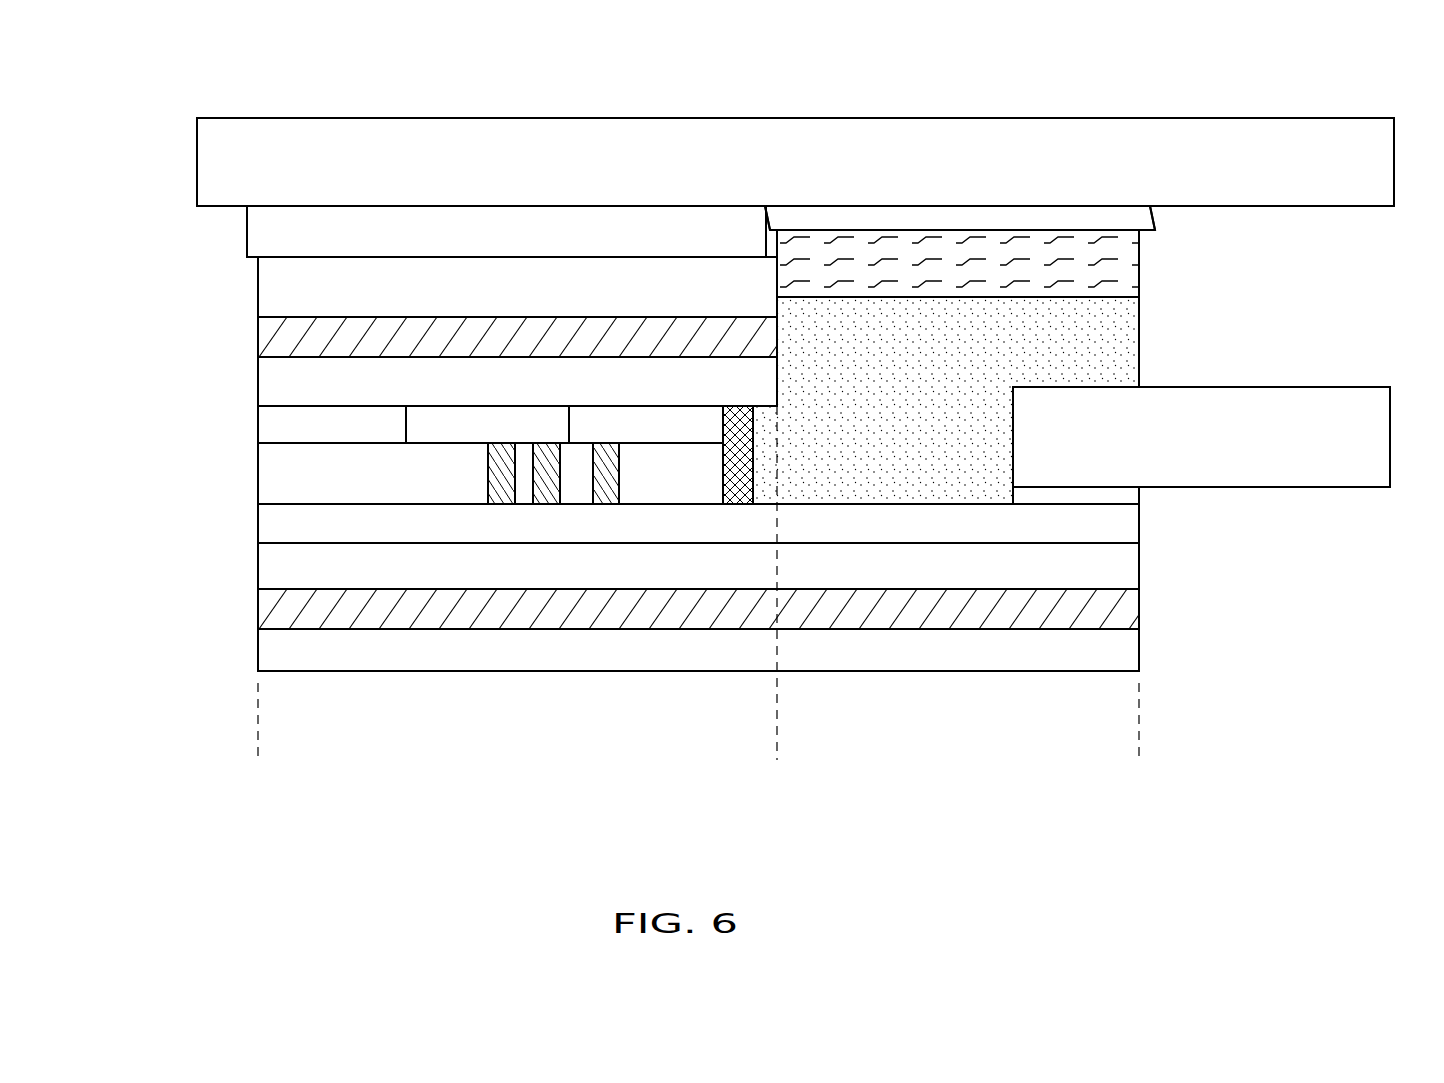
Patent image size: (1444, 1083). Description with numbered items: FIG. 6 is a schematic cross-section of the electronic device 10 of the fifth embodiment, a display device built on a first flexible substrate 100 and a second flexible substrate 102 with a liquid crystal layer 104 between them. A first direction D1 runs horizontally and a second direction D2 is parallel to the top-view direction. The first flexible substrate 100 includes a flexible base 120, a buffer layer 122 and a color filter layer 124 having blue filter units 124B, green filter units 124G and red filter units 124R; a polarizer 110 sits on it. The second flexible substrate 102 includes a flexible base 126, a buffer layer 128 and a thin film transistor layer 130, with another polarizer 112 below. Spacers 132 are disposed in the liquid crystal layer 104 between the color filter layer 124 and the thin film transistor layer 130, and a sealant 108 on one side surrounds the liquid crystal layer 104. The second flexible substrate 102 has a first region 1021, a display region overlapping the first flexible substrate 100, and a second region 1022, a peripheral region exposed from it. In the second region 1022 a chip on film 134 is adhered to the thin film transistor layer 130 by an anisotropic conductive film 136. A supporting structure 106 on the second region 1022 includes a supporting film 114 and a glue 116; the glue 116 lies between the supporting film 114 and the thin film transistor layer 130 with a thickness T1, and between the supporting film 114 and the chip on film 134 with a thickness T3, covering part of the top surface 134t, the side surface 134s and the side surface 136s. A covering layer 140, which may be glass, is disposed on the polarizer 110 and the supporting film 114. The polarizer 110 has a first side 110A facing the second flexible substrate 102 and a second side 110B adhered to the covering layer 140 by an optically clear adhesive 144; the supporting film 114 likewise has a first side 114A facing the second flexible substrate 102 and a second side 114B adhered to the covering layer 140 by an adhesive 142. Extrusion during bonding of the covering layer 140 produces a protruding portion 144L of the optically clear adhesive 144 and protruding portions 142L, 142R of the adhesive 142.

The electronic device 10 is at (1222, 75).
The covering layer 140 is at (218, 155).
The optically clear adhesive 144 is at (567, 217).
The protruding portion 144L is at (250, 235).
The second side 110B is at (473, 255).
The adhesive 142 is at (978, 217).
The protruding portion 142L is at (775, 210).
The protruding portion 142R is at (1142, 210).
The second side 114B is at (878, 228).
The supporting structure 106 is at (1023, 359).
The supporting film 114 is at (1127, 255).
The glue 116 is at (994, 399).
The first side 114A is at (833, 300).
The polarizer 110 is at (285, 288).
The first flexible substrate 100 is at (447, 380).
The flexible base 120 is at (285, 340).
The buffer layer 122 is at (285, 383).
The color filter layer 124 is at (480, 424).
The blue filter units 124B is at (353, 424).
The green filter units 124G is at (511, 424).
The red filter units 124R is at (667, 424).
The first side 110A is at (318, 322).
The liquid crystal layer 104 is at (285, 470).
The spacers 132 is at (488, 490).
The sealant 108 is at (742, 506).
The second flexible substrate 102 is at (628, 587).
The thin film transistor layer 130 is at (285, 524).
The buffer layer 128 is at (285, 569).
The flexible base 126 is at (285, 614).
The polarizer 112 is at (661, 650).
The chip on film 134 is at (1201, 437).
The top surface 134t is at (1345, 387).
The side surface 134s is at (1013, 445).
The anisotropic conductive film 136 is at (1130, 495).
The side surface 136s is at (1015, 498).
The thickness T1 is at (977, 298).
The thickness T3 is at (1061, 298).
The first region 1021 is at (777, 748).
The second region 1022 is at (777, 748).
The first direction D1 is at (84, 815).
The second direction D2 is at (84, 815).